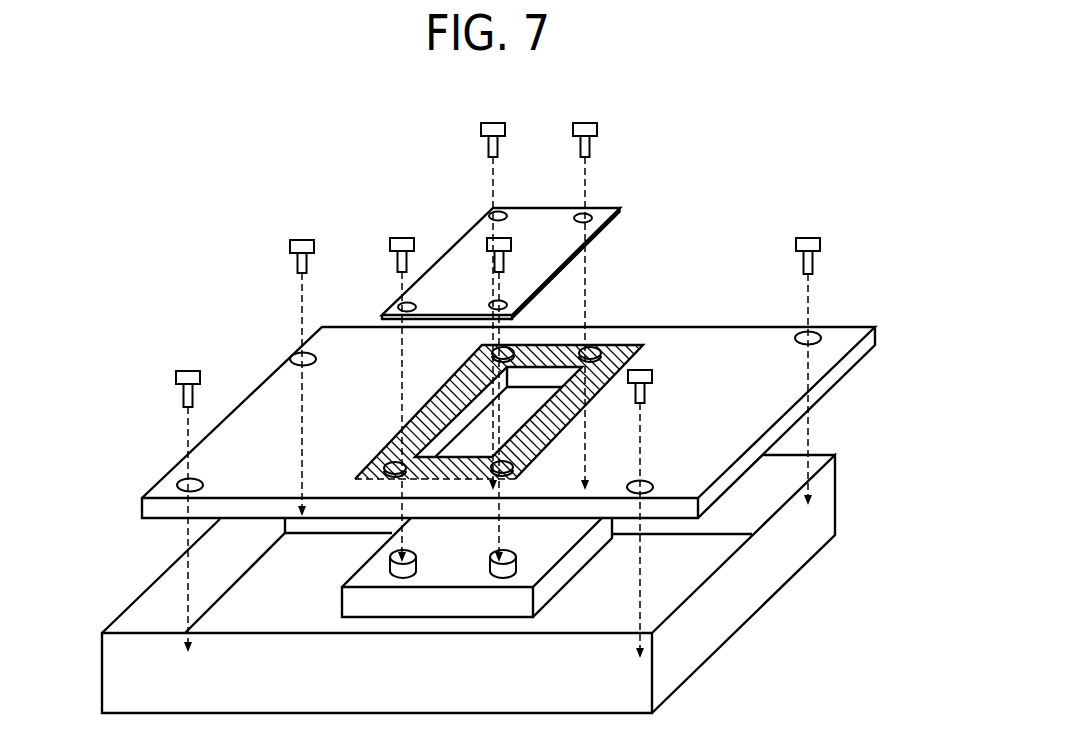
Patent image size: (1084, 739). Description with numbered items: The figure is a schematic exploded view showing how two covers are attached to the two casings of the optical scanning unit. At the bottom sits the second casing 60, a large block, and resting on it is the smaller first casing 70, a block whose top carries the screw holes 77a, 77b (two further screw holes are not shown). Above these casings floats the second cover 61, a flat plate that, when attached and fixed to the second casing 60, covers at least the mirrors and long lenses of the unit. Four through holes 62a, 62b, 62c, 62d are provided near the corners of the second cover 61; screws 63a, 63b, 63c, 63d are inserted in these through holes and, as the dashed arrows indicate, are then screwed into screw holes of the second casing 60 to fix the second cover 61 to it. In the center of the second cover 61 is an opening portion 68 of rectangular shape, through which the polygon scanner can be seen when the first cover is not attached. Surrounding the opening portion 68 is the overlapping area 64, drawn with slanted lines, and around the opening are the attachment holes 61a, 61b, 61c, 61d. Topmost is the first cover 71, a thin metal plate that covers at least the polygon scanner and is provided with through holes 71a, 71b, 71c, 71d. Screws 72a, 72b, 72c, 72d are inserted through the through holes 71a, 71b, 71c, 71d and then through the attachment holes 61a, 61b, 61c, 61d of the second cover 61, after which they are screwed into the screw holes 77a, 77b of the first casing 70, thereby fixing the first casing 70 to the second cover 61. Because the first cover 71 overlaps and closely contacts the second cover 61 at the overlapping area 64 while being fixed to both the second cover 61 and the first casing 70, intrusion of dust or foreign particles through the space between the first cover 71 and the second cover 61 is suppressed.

The second casing 60 is at (765, 593).
The second cover 61 is at (845, 330).
The attachment hole 61a is at (510, 469).
The attachment hole 61b is at (390, 462).
The attachment hole 61c is at (592, 347).
The attachment hole 61d is at (492, 354).
The through hole 62a is at (648, 481).
The through hole 62b is at (204, 485).
The through hole 62c is at (796, 340).
The through hole 62d is at (316, 359).
The screw 63a is at (653, 380).
The screw 63b is at (189, 370).
The screw 63c is at (808, 237).
The screw 63d is at (302, 239).
The overlapping area 64 is at (452, 398).
The opening portion 68 is at (518, 416).
The first casing 70 is at (568, 570).
The first cover 71 is at (603, 208).
The through hole 71a is at (508, 304).
The through hole 71b is at (404, 303).
The through hole 71c is at (592, 222).
The through hole 71d is at (490, 213).
The screw 72a is at (511, 240).
The screw 72b is at (402, 237).
The screw 72c is at (585, 122).
The screw 72d is at (493, 122).
The screw hole 77a is at (517, 553).
The screw hole 77b is at (417, 553).